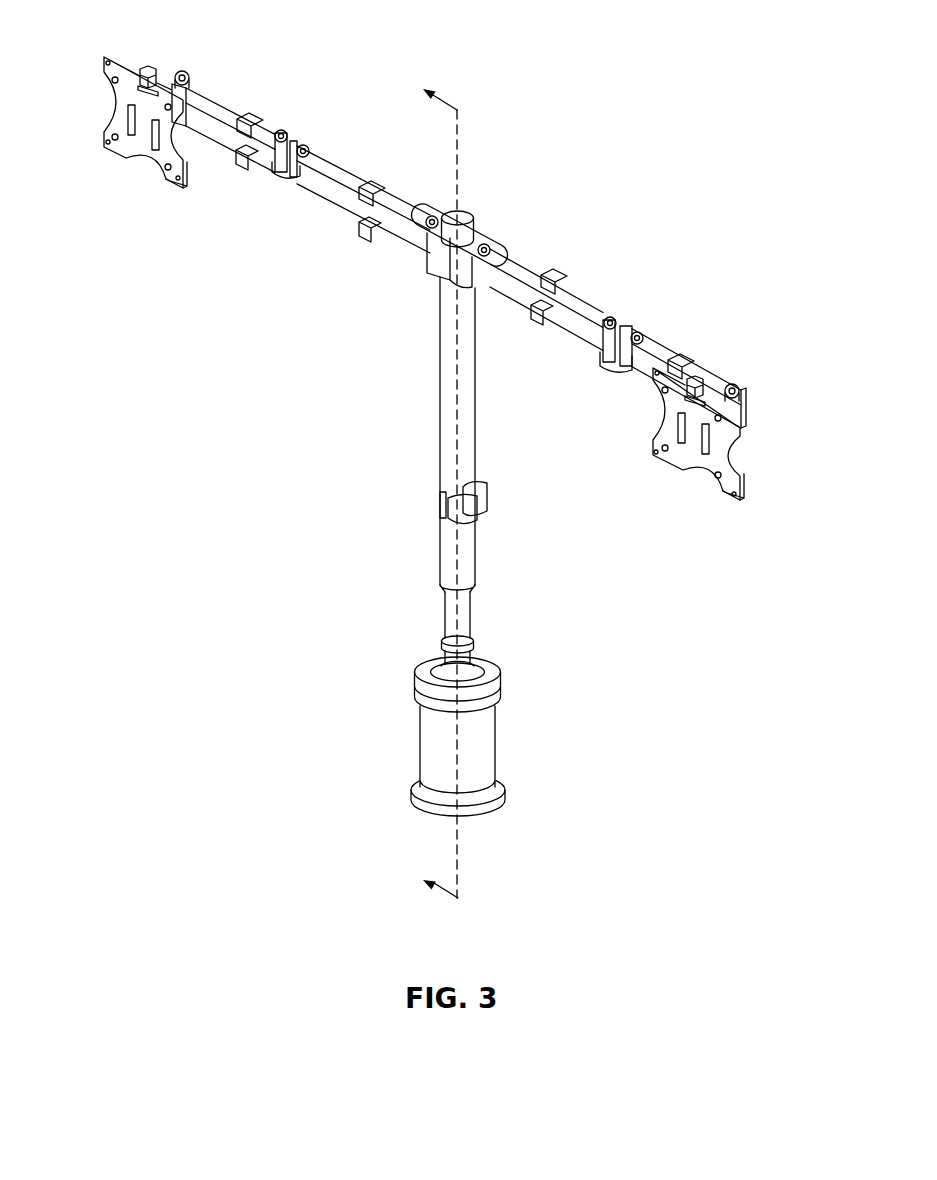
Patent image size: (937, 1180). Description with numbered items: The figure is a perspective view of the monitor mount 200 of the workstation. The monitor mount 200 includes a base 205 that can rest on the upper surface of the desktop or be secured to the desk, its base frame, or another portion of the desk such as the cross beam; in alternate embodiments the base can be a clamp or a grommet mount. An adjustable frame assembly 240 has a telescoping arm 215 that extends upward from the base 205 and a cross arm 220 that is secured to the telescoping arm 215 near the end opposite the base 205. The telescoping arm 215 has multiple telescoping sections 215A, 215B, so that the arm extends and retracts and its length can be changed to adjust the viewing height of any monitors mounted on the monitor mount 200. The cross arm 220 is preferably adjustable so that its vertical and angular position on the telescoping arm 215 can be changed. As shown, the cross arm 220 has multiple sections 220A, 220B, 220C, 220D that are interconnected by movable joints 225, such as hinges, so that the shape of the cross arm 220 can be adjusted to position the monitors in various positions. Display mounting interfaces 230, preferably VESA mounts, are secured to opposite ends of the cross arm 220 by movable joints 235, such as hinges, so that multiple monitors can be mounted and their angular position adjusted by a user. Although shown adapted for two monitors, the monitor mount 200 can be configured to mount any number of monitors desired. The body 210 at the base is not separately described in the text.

The monitor mount 200 is at (568, 133).
The base 205 is at (497, 737).
The base body 210 is at (432, 743).
The telescoping arm 215 is at (427, 446).
The telescoping section 215A is at (463, 420).
The telescoping section 215B is at (463, 612).
The cross arm 220 is at (352, 149).
The section of cross arm 220A is at (227, 128).
The section of cross arm 220B is at (337, 196).
The section of cross arm 220C is at (580, 332).
The section of cross arm 220D is at (657, 352).
The movable joint 225 is at (297, 140).
The display mounting interface 230 is at (115, 112).
The movable joint 235 is at (184, 76).
The adjustable frame assembly 240 is at (406, 303).